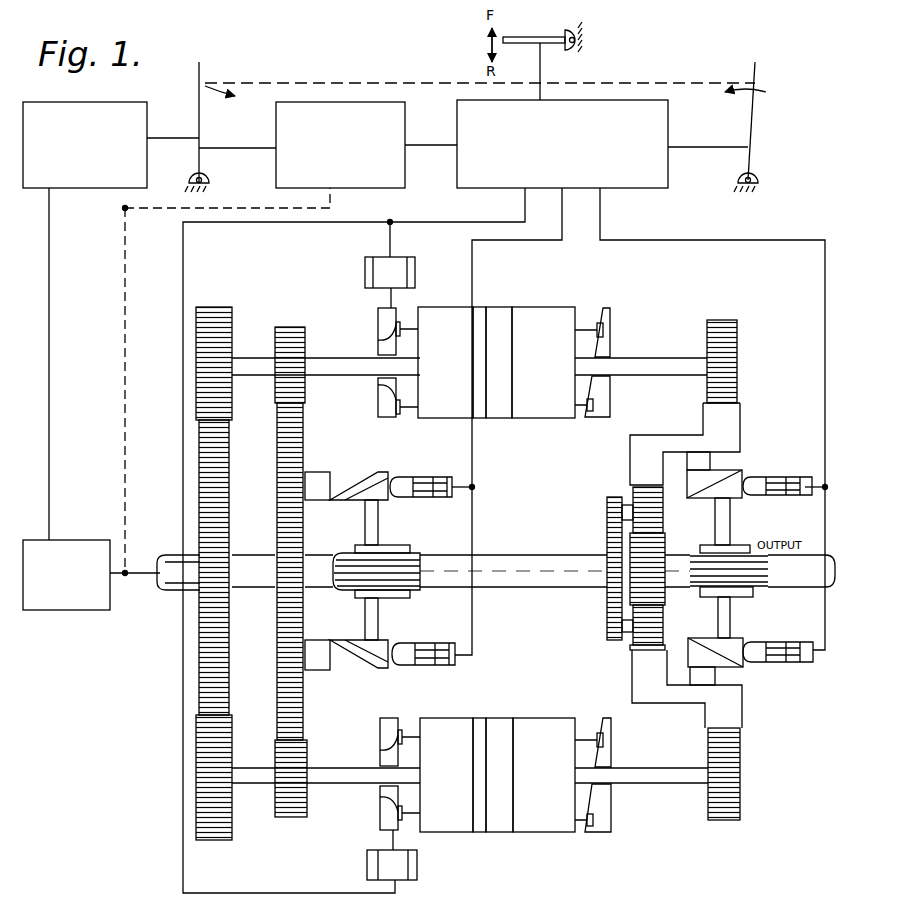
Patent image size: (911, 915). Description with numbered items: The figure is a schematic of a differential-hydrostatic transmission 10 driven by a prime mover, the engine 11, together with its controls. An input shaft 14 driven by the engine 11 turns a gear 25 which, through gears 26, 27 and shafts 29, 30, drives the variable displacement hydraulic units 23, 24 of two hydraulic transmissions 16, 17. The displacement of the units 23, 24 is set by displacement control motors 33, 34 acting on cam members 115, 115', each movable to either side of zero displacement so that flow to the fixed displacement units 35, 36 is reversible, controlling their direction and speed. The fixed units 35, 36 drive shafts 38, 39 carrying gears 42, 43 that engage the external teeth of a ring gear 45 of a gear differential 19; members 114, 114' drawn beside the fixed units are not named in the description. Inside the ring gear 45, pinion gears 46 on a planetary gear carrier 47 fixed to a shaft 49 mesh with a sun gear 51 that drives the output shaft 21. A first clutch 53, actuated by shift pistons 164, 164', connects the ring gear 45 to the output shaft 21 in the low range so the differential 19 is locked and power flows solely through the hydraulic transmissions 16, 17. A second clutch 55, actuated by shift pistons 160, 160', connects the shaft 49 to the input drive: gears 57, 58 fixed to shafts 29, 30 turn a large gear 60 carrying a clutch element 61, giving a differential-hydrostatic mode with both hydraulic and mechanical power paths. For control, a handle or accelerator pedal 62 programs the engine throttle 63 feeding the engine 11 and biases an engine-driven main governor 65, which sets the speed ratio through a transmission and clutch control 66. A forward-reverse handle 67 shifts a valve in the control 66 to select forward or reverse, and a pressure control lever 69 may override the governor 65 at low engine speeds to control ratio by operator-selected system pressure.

The differential-hydrostatic transmission 10 is at (118, 656).
The prime mover 11 is at (66, 604).
The input shaft 14 is at (166, 591).
The hydraulic transmission 16 is at (496, 305).
The hydraulic transmission 17 is at (500, 836).
The gear differential 19 is at (592, 612).
The output shaft 21 is at (790, 590).
The variable displacement hydraulic unit 23 is at (437, 307).
The variable displacement hydraulic unit 24 is at (462, 832).
The gear 25 is at (230, 547).
The gear 26 is at (215, 325).
The gear 27 is at (218, 830).
The shaft 29 is at (335, 362).
The shaft 30 is at (351, 785).
The displacement control motor 33 is at (365, 268).
The displacement control motor 34 is at (410, 873).
The fixed displacement unit 35 is at (545, 316).
The fixed displacement unit 36 is at (548, 832).
The shaft 38 is at (650, 364).
The shaft 39 is at (660, 785).
The gear 42 is at (722, 326).
The gear 43 is at (725, 822).
The ring gear 45 is at (630, 440).
The pinion gears 46 is at (640, 497).
The planetary gear carrier 47 is at (612, 514).
The shaft 49 is at (495, 562).
The sun gear 51 is at (657, 562).
The first clutch 53 is at (735, 470).
The second clutch 55 is at (375, 470).
The gear 57 is at (290, 346).
The gear 58 is at (293, 818).
The large gear 60 is at (290, 601).
The clutch element 61 is at (340, 666).
The control handle 62 is at (196, 106).
The engine throttle 63 is at (78, 184).
The main governor 65 is at (385, 188).
The transmission and clutch control 66 is at (668, 188).
The forward-reverse control handle 67 is at (545, 28).
The pressure control lever 69 is at (752, 128).
The clutch cone 114 is at (616, 356).
The clutch cone 114' is at (593, 775).
The cam member 115 is at (369, 354).
The cam member 115' is at (372, 772).
The shift piston 160 is at (421, 471).
The shift piston 160' is at (423, 638).
The shift piston 164 is at (777, 470).
The shift piston 164' is at (751, 667).